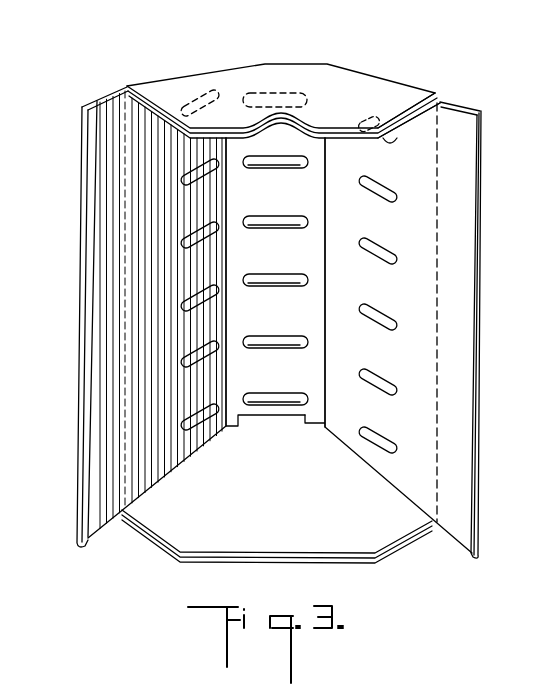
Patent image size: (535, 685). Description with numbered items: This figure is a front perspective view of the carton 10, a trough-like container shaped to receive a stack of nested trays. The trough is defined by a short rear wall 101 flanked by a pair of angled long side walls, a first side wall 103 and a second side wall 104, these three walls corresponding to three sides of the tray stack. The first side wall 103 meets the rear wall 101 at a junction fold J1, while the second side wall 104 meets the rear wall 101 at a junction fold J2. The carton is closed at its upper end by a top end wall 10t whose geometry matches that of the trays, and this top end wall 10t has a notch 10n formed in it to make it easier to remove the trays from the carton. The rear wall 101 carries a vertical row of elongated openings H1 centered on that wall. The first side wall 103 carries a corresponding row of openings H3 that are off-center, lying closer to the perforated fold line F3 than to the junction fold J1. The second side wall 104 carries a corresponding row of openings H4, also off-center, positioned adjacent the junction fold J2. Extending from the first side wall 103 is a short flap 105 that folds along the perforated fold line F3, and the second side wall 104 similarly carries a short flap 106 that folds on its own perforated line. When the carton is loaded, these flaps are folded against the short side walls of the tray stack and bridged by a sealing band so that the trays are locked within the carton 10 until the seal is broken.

The carton 10 is at (399, 75).
The top end wall 10t is at (277, 75).
The rear wall 101 is at (273, 135).
The notch 10n is at (305, 128).
The first side wall 103 is at (427, 120).
The second side wall 104 is at (150, 127).
The short flap 105 is at (460, 313).
The short flap 106 is at (97, 135).
The perforated fold line F3 is at (437, 146).
The elongated openings H1 is at (288, 221).
The openings H3 is at (385, 216).
The openings H4 is at (205, 256).
The junction fold J1 is at (325, 318).
The junction fold J2 is at (228, 202).